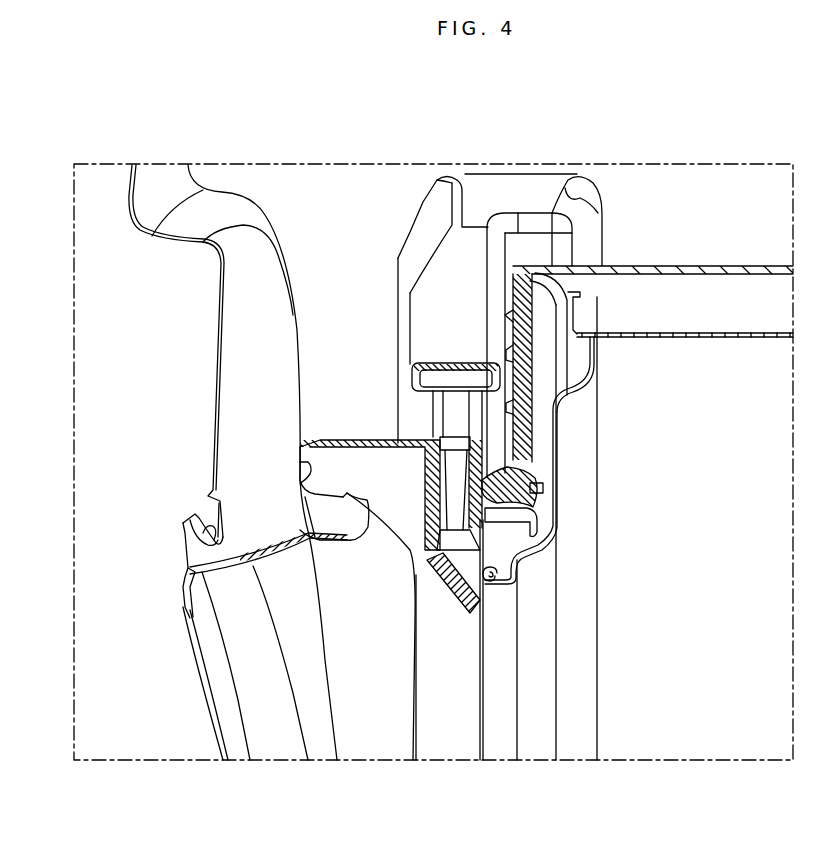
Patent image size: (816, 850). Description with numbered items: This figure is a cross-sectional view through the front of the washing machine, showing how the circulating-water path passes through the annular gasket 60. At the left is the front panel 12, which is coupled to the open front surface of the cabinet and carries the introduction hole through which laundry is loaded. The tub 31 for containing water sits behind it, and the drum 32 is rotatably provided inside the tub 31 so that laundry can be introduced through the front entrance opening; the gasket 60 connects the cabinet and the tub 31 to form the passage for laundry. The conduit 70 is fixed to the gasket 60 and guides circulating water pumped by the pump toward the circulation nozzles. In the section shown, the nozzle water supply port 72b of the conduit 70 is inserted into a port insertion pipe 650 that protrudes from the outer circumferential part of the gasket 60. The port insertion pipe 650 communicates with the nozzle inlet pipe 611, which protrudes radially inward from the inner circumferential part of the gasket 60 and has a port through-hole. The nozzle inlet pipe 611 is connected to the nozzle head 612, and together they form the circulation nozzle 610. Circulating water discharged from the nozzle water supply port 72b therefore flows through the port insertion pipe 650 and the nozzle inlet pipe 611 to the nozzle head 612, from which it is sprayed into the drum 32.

The front panel 12 is at (178, 297).
The gasket 60 is at (285, 523).
The conduit 70 is at (467, 360).
The nozzle water supply port 72b is at (440, 385).
The port insertion pipe 650 is at (450, 408).
The circulation nozzle 610 is at (445, 598).
The nozzle inlet pipe 611 is at (483, 528).
The nozzle head 612 is at (507, 586).
The tub 31 is at (543, 362).
The drum 32 is at (503, 642).